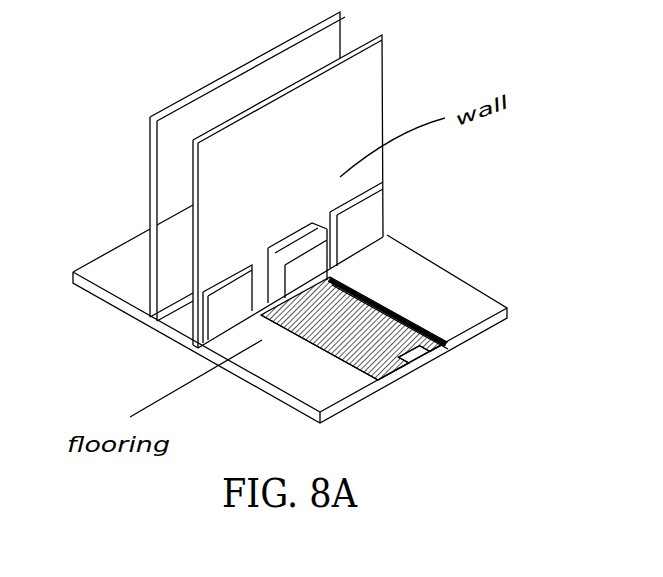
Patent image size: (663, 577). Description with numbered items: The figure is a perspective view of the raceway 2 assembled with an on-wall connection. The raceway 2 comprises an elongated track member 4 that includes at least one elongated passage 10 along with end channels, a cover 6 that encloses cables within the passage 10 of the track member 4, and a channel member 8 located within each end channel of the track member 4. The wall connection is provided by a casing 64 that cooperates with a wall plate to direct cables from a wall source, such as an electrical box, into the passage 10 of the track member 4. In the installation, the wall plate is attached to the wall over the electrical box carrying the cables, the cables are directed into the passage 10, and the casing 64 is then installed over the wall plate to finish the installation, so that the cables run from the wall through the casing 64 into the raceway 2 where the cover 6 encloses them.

The raceway 2 is at (393, 297).
The track member 4 is at (430, 367).
The cover 6 is at (395, 317).
The channel member 8 is at (329, 350).
The passage 10 is at (413, 357).
The casing 64 is at (292, 263).